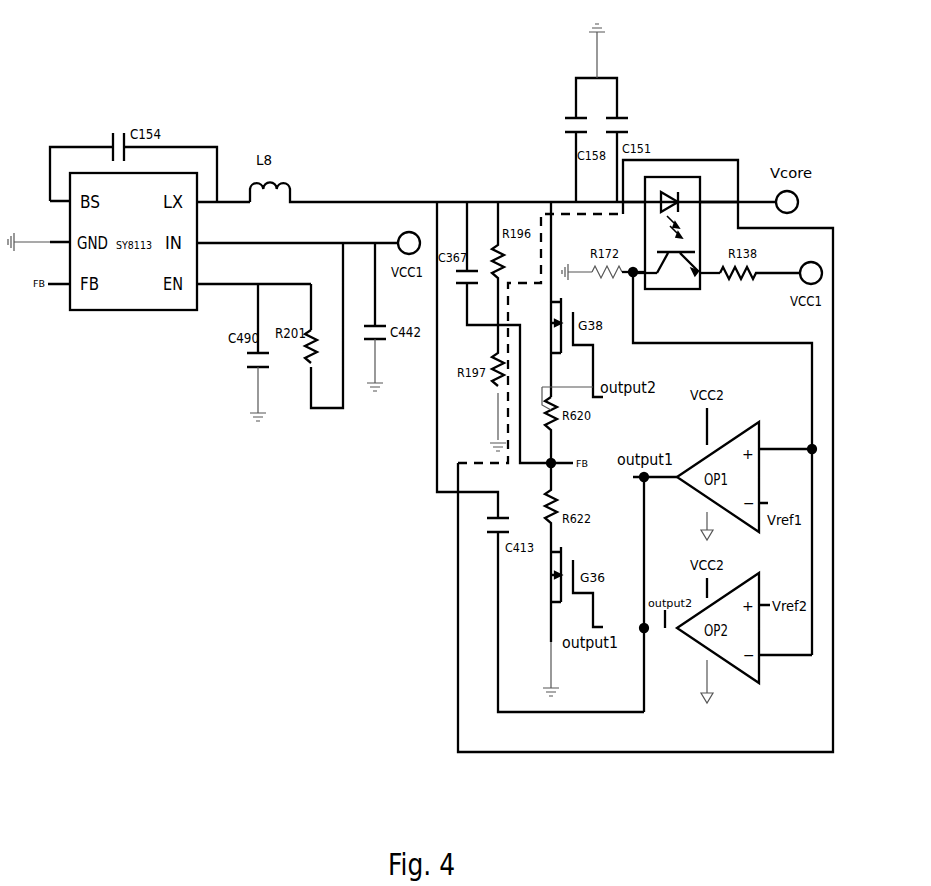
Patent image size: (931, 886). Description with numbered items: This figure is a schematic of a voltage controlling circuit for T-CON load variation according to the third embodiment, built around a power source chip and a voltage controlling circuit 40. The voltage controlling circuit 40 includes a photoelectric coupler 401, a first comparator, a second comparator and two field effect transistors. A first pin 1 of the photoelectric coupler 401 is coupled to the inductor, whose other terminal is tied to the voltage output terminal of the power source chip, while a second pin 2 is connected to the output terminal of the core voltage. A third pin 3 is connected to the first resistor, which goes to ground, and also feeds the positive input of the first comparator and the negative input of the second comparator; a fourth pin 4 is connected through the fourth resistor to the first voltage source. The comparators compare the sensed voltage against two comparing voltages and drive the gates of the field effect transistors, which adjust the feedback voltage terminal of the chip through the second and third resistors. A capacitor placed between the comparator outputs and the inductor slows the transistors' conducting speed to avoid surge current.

The voltage controlling circuit 40 is at (541, 752).
The photoelectric coupler 401 is at (683, 220).
The first pin of the photoelectric coupler 1 is at (634, 192).
The second pin of the photoelectric coupler 2 is at (719, 192).
The third pin of the photoelectric coupler 3 is at (645, 258).
The fourth pin of the photoelectric coupler 4 is at (710, 264).